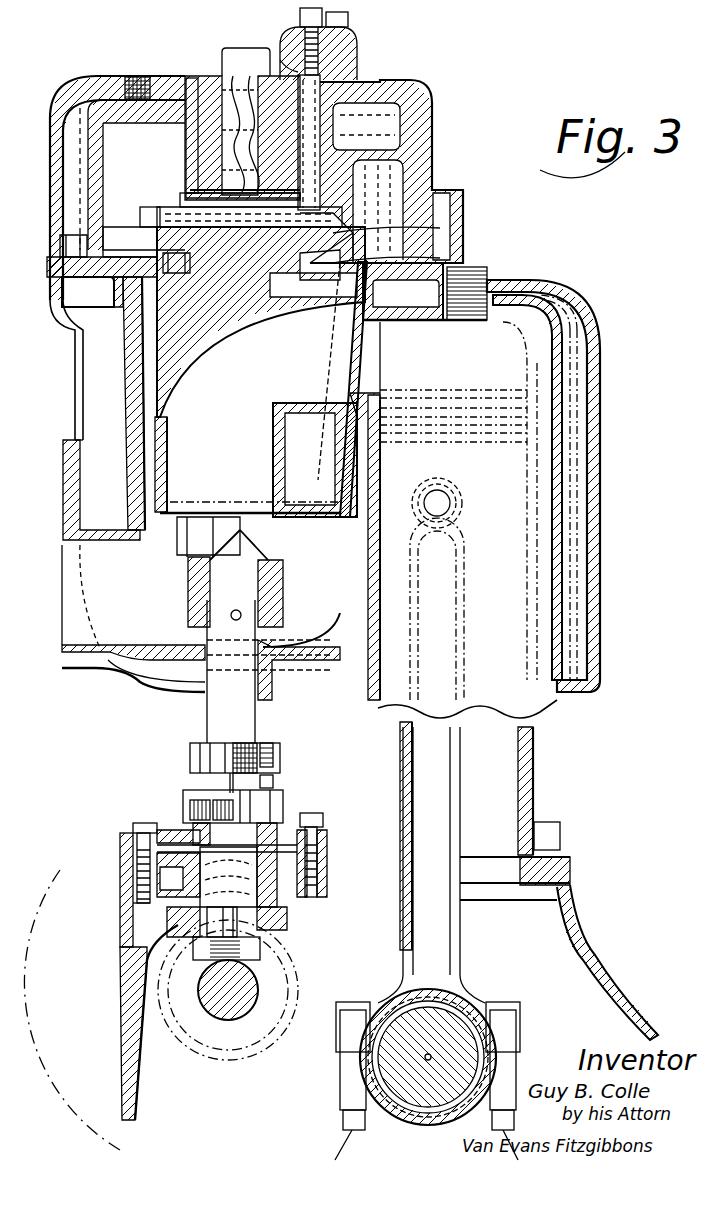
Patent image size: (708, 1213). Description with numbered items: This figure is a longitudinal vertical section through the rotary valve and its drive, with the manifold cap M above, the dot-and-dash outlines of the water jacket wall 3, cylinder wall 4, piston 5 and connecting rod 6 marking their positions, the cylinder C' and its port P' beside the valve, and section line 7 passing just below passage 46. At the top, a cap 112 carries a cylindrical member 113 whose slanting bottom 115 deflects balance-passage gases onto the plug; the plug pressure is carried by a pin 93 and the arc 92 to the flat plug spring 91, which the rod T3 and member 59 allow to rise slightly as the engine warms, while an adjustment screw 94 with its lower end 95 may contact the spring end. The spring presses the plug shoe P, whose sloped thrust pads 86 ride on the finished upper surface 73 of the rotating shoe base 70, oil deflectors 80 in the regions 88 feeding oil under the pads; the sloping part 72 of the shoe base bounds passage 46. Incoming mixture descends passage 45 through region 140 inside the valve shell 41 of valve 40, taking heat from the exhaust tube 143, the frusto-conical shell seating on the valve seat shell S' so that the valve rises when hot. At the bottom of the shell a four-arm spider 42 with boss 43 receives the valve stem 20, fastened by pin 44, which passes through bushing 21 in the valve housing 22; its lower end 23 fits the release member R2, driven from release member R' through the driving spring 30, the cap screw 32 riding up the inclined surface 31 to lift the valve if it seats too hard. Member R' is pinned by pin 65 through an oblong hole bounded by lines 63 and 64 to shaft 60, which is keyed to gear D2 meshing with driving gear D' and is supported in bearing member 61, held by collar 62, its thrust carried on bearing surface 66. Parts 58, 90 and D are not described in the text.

The valve manifold cap M is at (92, 92).
The cylindrical member 113 is at (245, 100).
The cap 112 is at (232, 100).
The slanting bottom 115 is at (222, 90).
The adjustment screw 94 is at (192, 78).
The temperature-adjusting member 59 is at (302, 22).
The cap 58 is at (350, 34).
The rod T3 is at (290, 50).
The tube 90 is at (325, 76).
The regions between thrust pads 88 is at (307, 230).
The upper surface of shoe base 73 is at (333, 233).
The sloping part of shoe base 72 is at (333, 263).
The plug shoe P is at (211, 188).
The flat plug spring 91 is at (188, 200).
The pin 93 is at (260, 200).
The oil deflector 80 is at (145, 212).
The shoe base 70 is at (160, 232).
The lower end of adjustment screw 95 is at (175, 252).
The piston 5 is at (50, 257).
The section line 7— 7 is at (130, 288).
The passage 45 is at (140, 318).
The cylinder wall 4 is at (130, 352).
The valve 40 is at (132, 370).
The valve shell 41 is at (128, 388).
The valve seat shell S' is at (94, 455).
The passage 46 is at (313, 285).
The curved part of plug 92 is at (300, 262).
The thrust bearing pad 86 is at (335, 262).
The exhaust tube 143 is at (250, 445).
The region 140 is at (315, 460).
The port P' is at (453, 520).
The water jacket wall 3 is at (600, 333).
The connecting rod 6 is at (128, 492).
The cylinder C' is at (496, 943).
The four-arm spider 42 is at (182, 560).
The boss 43 is at (192, 607).
The pin 44 is at (230, 616).
The valve housing 22 is at (112, 668).
The bushing 21 is at (150, 686).
The valve stem 20 is at (207, 714).
The lower end of valve stem 23 is at (195, 748).
The release drive member R2 is at (190, 752).
The driving spring 30 is at (187, 778).
The adjustment cap screw 32 is at (273, 760).
The inclined surface 31 is at (276, 782).
The top line of oblong hole 63 is at (300, 815).
The pin 65 is at (325, 815).
The bottom line of oblong hole 64 is at (330, 838).
The release driving member R' is at (202, 805).
The shaft 60 is at (200, 828).
The bearing member 61 is at (120, 832).
The bearing surface 66 is at (118, 852).
The collar 62 is at (120, 860).
The gear D2 is at (282, 940).
The driving gear D' is at (172, 1010).
The shaft D is at (230, 996).